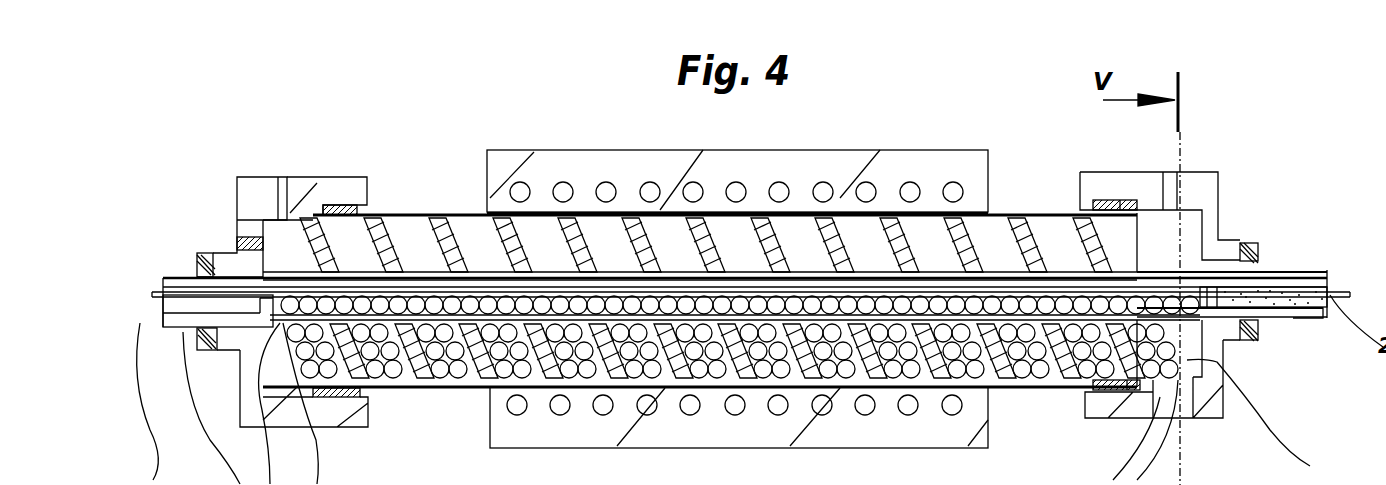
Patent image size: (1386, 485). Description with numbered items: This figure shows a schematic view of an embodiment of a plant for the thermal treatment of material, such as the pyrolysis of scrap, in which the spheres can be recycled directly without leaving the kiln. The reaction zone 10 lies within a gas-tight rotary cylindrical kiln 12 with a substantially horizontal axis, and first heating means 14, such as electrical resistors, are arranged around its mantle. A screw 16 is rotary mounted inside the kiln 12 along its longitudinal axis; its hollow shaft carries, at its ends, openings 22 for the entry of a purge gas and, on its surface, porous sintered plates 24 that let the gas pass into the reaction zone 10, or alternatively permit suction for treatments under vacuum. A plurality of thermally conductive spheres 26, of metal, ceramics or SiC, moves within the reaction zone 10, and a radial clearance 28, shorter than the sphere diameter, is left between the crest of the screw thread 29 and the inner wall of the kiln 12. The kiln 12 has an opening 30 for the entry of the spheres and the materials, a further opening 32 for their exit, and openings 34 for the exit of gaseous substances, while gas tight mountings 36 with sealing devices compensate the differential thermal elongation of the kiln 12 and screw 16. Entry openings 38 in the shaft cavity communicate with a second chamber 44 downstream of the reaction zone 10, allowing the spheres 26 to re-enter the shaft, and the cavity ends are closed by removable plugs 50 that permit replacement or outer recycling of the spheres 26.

The reaction zone 10 is at (400, 413).
The rotary cylindrical kiln 12 is at (413, 214).
The first heating means 14 is at (650, 184).
The screw 16 is at (1273, 318).
The openings 22 is at (657, 404).
The porous sintered plates 24 is at (870, 272).
The spheres 26 is at (1133, 416).
The radial clearance 28 is at (978, 220).
The screw thread 29 is at (1033, 214).
The opening 30 is at (237, 218).
The further opening 32 is at (1187, 422).
The openings 34 is at (283, 177).
The gas tight mountings 36 is at (247, 177).
The entry openings 38 is at (1203, 318).
The second chamber 44 is at (1261, 422).
The plugs 50 is at (193, 290).